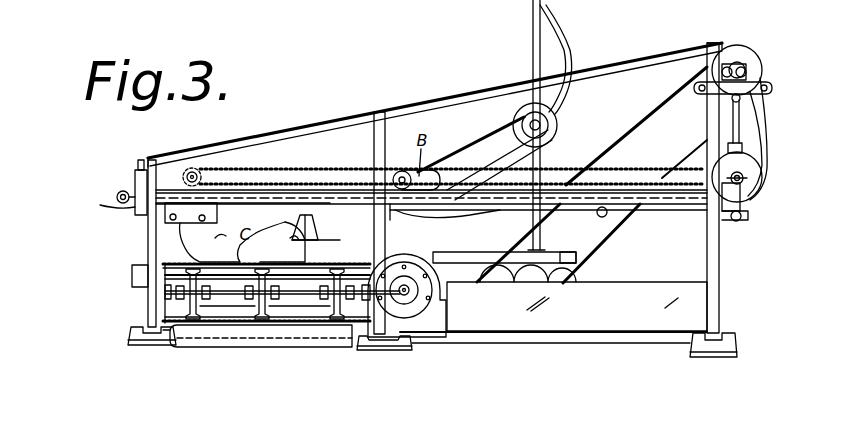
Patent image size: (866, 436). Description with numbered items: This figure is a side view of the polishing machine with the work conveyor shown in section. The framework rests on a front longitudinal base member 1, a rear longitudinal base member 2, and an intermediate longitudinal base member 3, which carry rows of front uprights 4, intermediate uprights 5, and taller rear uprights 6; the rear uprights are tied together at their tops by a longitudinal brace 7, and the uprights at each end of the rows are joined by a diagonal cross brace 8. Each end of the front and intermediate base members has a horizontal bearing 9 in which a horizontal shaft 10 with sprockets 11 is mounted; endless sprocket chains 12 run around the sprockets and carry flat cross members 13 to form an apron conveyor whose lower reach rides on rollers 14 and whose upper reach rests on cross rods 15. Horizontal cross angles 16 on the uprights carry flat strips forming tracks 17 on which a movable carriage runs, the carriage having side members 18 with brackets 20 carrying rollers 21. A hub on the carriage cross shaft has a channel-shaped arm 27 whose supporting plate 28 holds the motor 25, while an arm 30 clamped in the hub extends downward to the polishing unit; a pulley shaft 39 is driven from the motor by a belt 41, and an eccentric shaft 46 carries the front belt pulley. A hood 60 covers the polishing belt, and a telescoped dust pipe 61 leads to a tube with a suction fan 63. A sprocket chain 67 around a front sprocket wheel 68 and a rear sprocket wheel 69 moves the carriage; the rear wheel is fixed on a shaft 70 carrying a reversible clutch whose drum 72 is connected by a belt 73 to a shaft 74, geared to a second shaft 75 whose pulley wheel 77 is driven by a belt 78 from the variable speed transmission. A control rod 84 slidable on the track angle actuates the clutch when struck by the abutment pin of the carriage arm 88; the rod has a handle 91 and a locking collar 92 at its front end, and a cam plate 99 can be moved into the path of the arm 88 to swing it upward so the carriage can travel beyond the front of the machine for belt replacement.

The front longitudinal base member 1 is at (152, 336).
The rear longitudinal base member 2 is at (712, 347).
The intermediate longitudinal base member 3 is at (379, 347).
The front uprights 4 is at (147, 233).
The intermediate uprights 5 is at (378, 132).
The rear uprights 6 is at (714, 261).
The longitudinal brace 7 is at (725, 44).
The diagonal cross brace 8 is at (447, 99).
The horizontal bearing 9 is at (150, 306).
The horizontal shaft 10 is at (302, 296).
The sprockets 11 is at (194, 297).
The endless sprocket chains 12 is at (186, 267).
The flat cross members 13 is at (240, 263).
The rollers 14 is at (213, 334).
The cross rods 15 is at (164, 288).
The cross angles 16 is at (658, 207).
The tracks 17 is at (438, 197).
The side members 18 is at (473, 178).
The brackets 20 is at (406, 172).
The rollers 21 is at (396, 181).
The motor 25 is at (560, 110).
The channel-shaped arm 27 is at (507, 168).
The supporting plate 28 is at (562, 143).
The arm 30 is at (403, 212).
The pulley shaft 39 is at (286, 241).
The belt 41 is at (463, 146).
The shaft 46 is at (210, 238).
The hood 60 is at (185, 232).
The telescoped dust pipe 61 is at (452, 262).
The suction fan 63 is at (436, 260).
The sprocket chain 67 is at (279, 166).
The sprocket wheel 68 is at (190, 168).
The sprocket wheel 69 is at (744, 174).
The shaft 70 is at (745, 186).
The drum 72 is at (748, 178).
The belt 73 is at (762, 136).
The shaft 74 is at (722, 72).
The shaft 75 is at (744, 66).
The pulley wheel 77 is at (761, 72).
The belt 78 is at (663, 113).
The control rod 84 is at (629, 224).
The arm 88 is at (296, 203).
The handle 91 is at (117, 195).
The locking collar 92 is at (135, 207).
The cam plate 99 is at (200, 206).